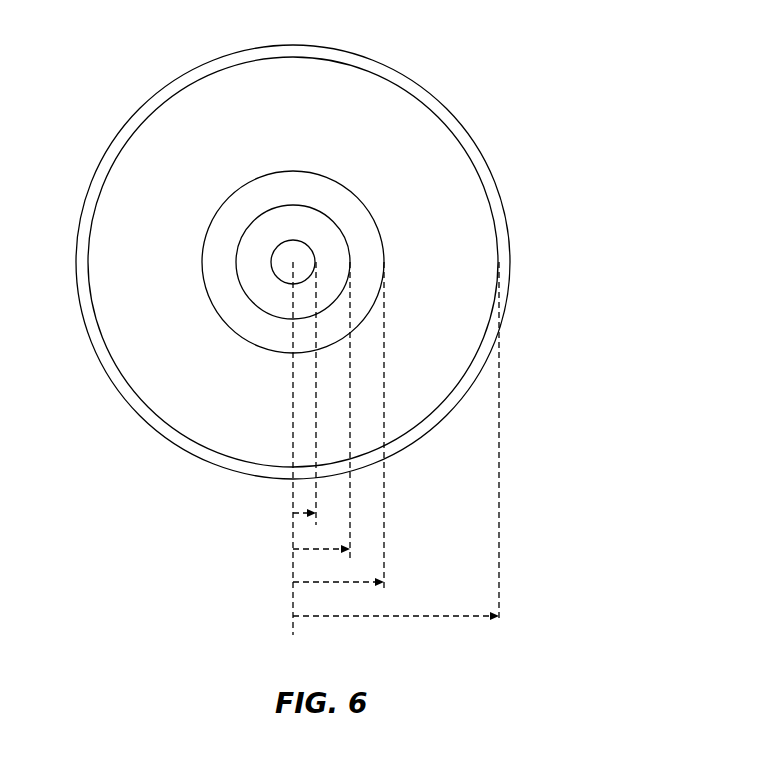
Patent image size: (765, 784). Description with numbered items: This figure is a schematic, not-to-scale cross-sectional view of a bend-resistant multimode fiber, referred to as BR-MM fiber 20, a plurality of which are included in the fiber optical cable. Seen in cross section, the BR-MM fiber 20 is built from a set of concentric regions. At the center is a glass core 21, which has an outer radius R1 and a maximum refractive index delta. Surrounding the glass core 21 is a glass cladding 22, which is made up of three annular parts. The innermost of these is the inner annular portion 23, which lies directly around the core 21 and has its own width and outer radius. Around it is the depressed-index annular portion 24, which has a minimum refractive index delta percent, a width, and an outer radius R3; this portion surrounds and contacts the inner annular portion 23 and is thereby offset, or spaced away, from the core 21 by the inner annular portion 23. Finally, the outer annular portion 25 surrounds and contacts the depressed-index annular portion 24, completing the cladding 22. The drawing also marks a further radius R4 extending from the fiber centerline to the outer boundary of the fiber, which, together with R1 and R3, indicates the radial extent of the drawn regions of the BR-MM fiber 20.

The BR-MM fiber 20 is at (113, 79).
The glass core 21 is at (310, 257).
The glass cladding 22 is at (378, 262).
The inner annular portion 23 is at (307, 227).
The depressed-index annular portion 24 is at (327, 192).
The outer annular portion 25 is at (422, 148).
The outer radius of core R1 is at (304, 513).
The outer radius of depressed-index annular portion R3 is at (308, 549).
The radius R4 is at (308, 616).